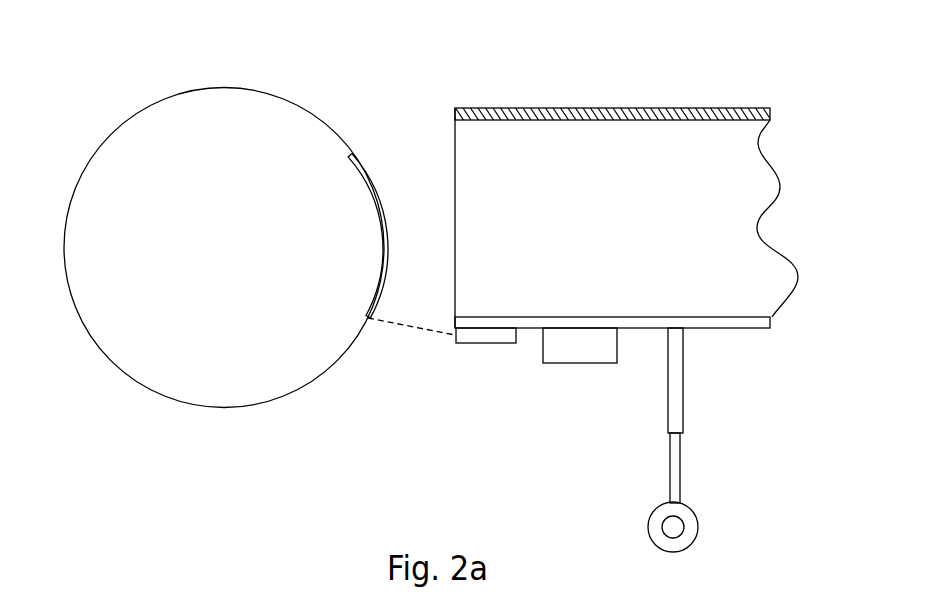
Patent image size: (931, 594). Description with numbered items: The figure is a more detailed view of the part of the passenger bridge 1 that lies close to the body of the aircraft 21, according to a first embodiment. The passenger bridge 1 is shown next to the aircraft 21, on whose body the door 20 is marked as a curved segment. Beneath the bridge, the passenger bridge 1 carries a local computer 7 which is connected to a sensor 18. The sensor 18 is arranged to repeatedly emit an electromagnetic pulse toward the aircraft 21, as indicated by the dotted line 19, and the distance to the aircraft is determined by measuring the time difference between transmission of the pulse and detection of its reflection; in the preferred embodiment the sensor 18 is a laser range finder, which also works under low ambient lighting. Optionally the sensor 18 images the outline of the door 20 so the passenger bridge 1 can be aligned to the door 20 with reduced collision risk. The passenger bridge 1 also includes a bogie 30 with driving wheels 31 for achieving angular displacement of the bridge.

The passenger bridge 1 is at (597, 110).
The local computer 7 is at (577, 364).
The sensor 18 is at (480, 343).
The dotted line 19 is at (402, 331).
The door 20 is at (356, 153).
The aircraft 21 is at (253, 90).
The bogie 30 is at (683, 458).
The driving wheels 31 is at (698, 528).